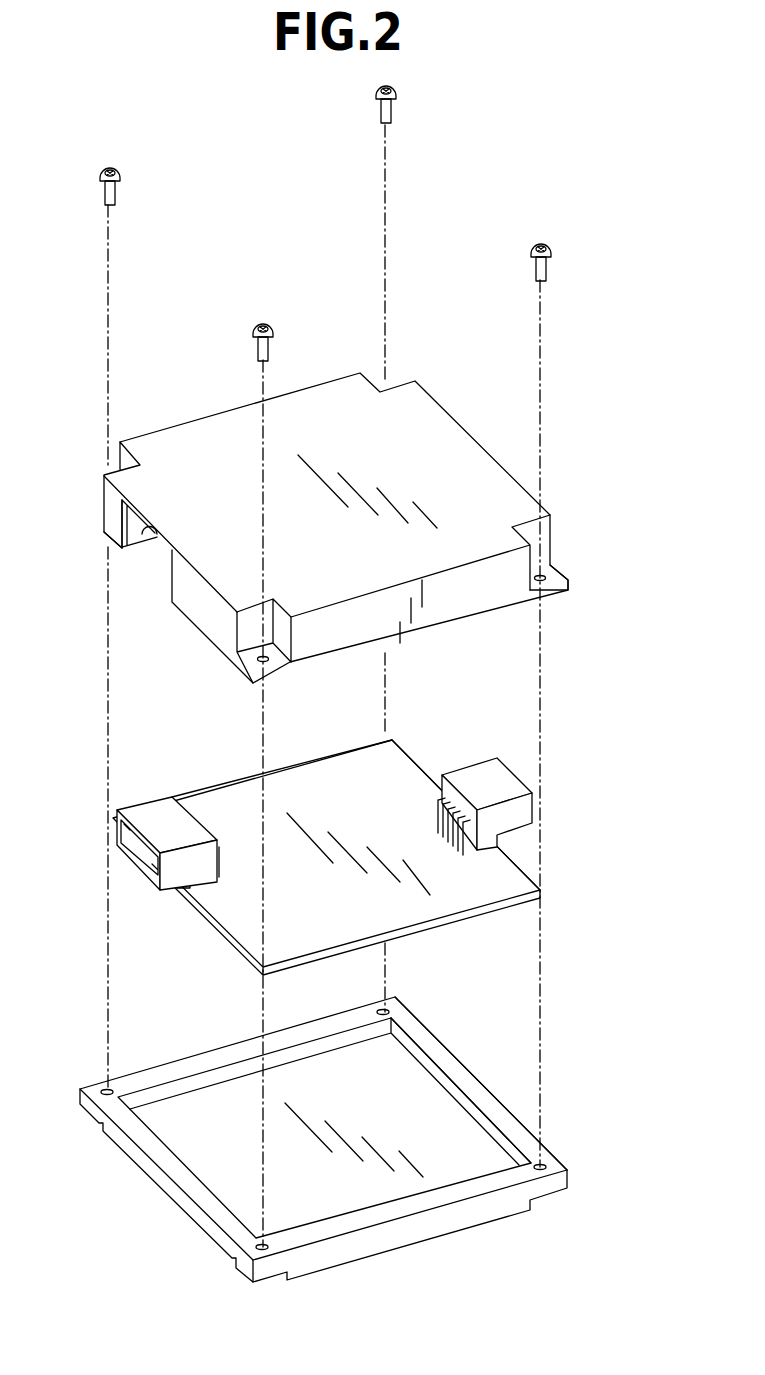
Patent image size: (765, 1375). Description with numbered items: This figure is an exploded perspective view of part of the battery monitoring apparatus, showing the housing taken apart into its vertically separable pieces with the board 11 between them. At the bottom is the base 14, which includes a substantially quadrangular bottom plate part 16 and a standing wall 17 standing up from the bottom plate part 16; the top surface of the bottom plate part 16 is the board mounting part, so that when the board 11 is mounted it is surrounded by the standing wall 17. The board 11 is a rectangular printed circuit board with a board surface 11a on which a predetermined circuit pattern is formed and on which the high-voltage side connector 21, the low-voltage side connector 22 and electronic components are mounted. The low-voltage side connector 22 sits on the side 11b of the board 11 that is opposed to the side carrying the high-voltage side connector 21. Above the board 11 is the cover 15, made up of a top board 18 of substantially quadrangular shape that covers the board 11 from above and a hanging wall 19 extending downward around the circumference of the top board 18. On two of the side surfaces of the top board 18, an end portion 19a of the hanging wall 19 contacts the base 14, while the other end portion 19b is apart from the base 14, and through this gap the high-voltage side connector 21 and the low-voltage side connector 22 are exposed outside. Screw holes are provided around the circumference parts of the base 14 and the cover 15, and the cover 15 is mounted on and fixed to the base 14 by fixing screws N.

The fixing screws N is at (116, 189).
The board 11 is at (326, 840).
The board surface 11a is at (340, 752).
The side 11b is at (402, 748).
The base 14 is at (351, 1151).
The cover 15 is at (336, 523).
The bottom plate part 16 is at (440, 1137).
The standing wall 17 is at (522, 1133).
The top board 18 is at (473, 457).
The hanging wall 19 is at (433, 622).
The end portion 19a is at (487, 617).
The end portion 19b is at (138, 532).
The high-voltage side connector 21 is at (158, 799).
The low-voltage side connector 22 is at (485, 757).